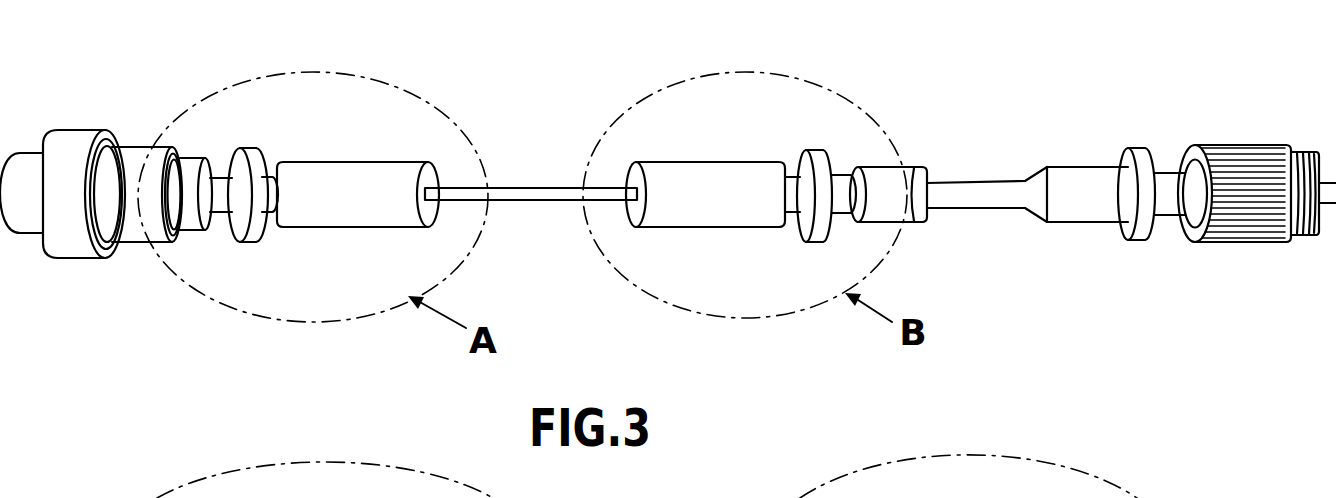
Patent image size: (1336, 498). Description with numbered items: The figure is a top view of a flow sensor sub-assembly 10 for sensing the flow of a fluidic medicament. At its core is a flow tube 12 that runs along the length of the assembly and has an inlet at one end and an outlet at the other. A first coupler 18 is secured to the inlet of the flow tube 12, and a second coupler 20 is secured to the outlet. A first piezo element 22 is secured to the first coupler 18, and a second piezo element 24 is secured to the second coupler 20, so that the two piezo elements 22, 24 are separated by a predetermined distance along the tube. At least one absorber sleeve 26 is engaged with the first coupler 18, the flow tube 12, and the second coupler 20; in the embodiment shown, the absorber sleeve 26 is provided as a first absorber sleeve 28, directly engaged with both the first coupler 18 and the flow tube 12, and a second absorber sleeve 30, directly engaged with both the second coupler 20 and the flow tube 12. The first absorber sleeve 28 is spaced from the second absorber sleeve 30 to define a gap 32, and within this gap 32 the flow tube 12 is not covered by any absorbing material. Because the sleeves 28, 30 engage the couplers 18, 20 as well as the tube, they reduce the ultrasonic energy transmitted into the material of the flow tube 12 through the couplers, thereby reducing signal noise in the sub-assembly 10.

The flow sensor sub-assembly 10 is at (668, 163).
The flow tube 12 is at (530, 201).
The first coupler 18 is at (269, 182).
The second coupler 20 is at (795, 192).
The first piezo element 22 is at (243, 232).
The second piezo element 24 is at (820, 162).
The absorber sleeve 26 is at (531, 139).
The first absorber sleeve 28 is at (378, 175).
The second absorber sleeve 30 is at (694, 180).
The gap 32 is at (531, 180).